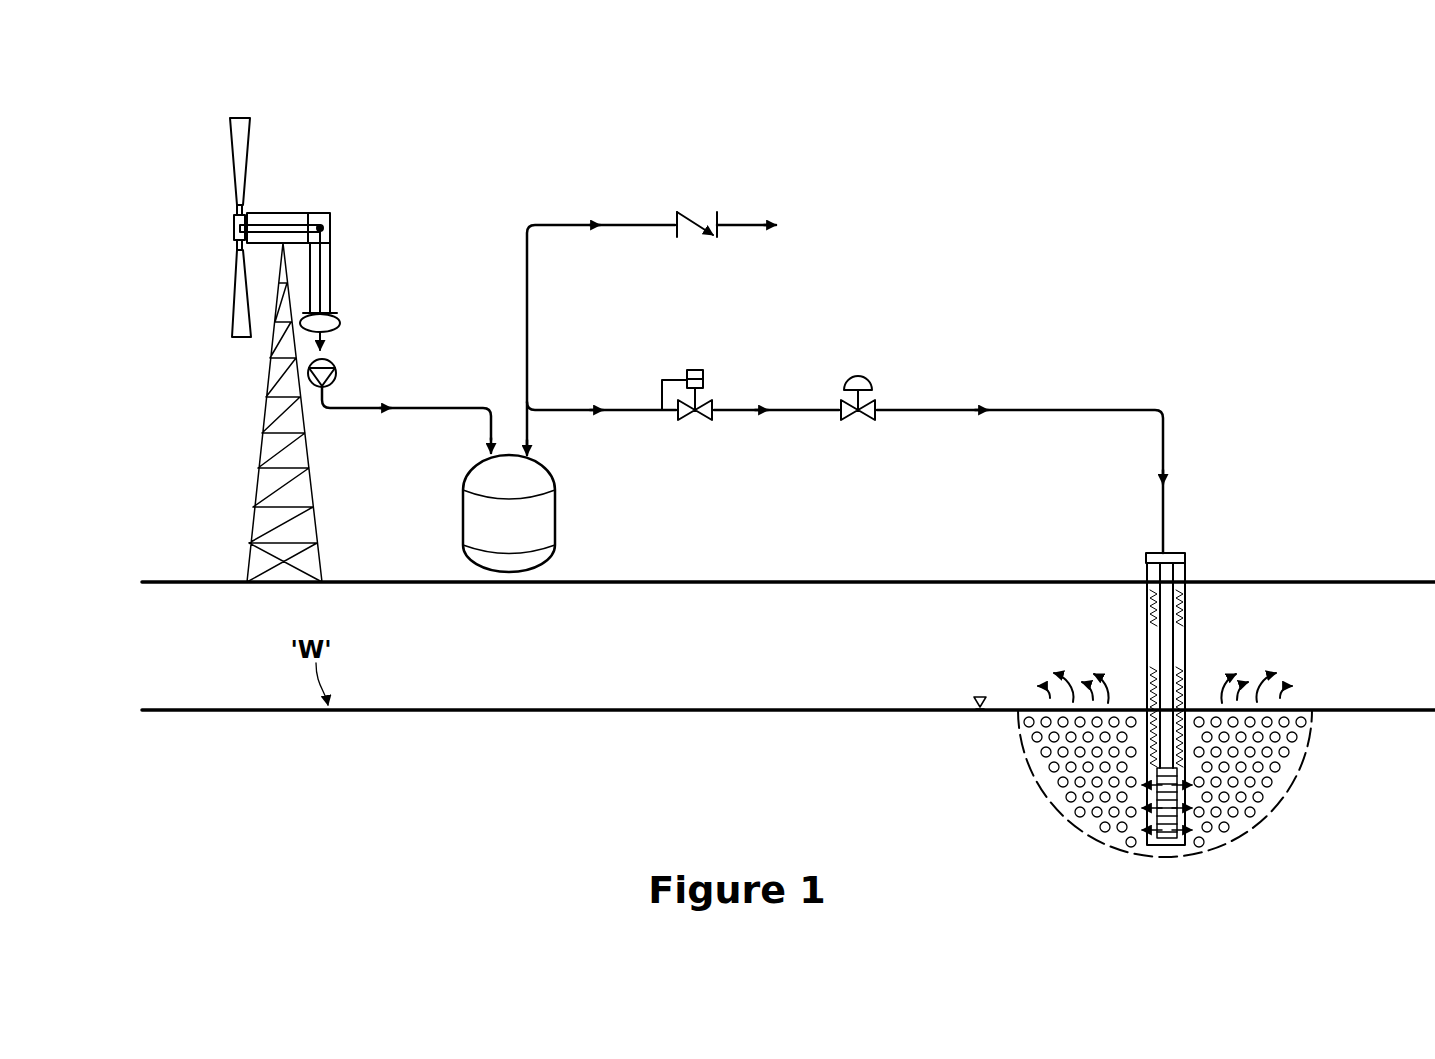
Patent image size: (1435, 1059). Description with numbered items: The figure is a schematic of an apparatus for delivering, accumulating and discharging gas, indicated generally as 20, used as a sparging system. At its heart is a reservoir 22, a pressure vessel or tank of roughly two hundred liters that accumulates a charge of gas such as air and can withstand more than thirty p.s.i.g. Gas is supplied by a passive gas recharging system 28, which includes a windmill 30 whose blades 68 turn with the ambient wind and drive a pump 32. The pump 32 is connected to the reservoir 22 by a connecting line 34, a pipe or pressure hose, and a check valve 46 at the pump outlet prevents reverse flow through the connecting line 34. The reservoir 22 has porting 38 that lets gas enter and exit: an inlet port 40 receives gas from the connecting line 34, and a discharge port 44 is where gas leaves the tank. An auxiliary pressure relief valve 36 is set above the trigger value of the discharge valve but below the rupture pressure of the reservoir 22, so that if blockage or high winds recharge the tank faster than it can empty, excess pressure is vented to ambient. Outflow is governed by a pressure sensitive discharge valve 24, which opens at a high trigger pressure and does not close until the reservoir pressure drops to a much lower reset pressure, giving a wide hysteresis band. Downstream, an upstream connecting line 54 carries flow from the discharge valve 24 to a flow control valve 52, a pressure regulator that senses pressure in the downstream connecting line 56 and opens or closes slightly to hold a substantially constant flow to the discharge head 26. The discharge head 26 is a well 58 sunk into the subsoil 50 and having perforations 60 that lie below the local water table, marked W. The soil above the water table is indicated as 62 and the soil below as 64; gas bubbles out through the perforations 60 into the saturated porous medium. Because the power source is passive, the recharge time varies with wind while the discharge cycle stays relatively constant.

The apparatus for delivering, accumulating and discharging gas 20 is at (860, 143).
The reservoir 22 is at (558, 530).
The pressure sensitive discharge valve 24 is at (695, 367).
The discharge head 26 is at (1125, 565).
The passive gas recharging system 28 is at (219, 198).
The windmill 30 is at (294, 212).
The pump 32 is at (338, 317).
The connecting line 34 is at (392, 417).
The auxiliary pressure relief valve 36 is at (700, 202).
The porting 38 is at (507, 407).
The inlet port 40 is at (486, 457).
The discharge port 44 is at (533, 457).
The check valve 46 is at (341, 369).
The subsoil 50 is at (202, 613).
The flow control valve 52 is at (858, 372).
The upstream connecting line 54 is at (794, 415).
The downstream connecting line 56 is at (945, 405).
The well 58 is at (1188, 633).
The perforations 60 is at (1180, 848).
The portion of the soil above the water table 62 is at (452, 659).
The portion of the soil below the water table 64 is at (452, 765).
The blades 68 is at (228, 171).